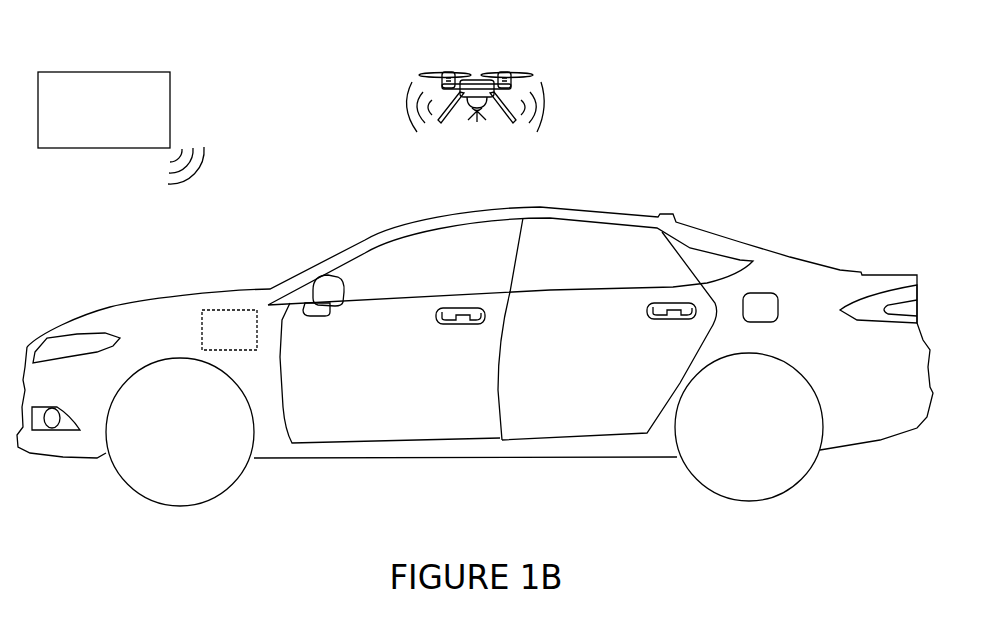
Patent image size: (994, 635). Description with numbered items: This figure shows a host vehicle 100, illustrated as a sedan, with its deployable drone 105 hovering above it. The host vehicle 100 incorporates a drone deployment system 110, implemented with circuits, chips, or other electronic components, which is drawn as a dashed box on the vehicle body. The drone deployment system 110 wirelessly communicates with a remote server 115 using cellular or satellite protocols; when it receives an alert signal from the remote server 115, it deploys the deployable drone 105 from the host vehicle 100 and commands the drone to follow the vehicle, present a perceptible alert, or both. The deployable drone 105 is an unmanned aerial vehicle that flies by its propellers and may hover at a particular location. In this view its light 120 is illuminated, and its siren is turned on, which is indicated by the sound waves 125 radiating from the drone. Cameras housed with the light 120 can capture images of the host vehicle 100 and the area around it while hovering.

The host vehicle 100 is at (540, 193).
The deployable drone 105 is at (477, 81).
The drone deployment system 110 is at (227, 310).
The remote server 115 is at (170, 108).
The lights 120 is at (475, 112).
The sound waves 125 is at (545, 107).